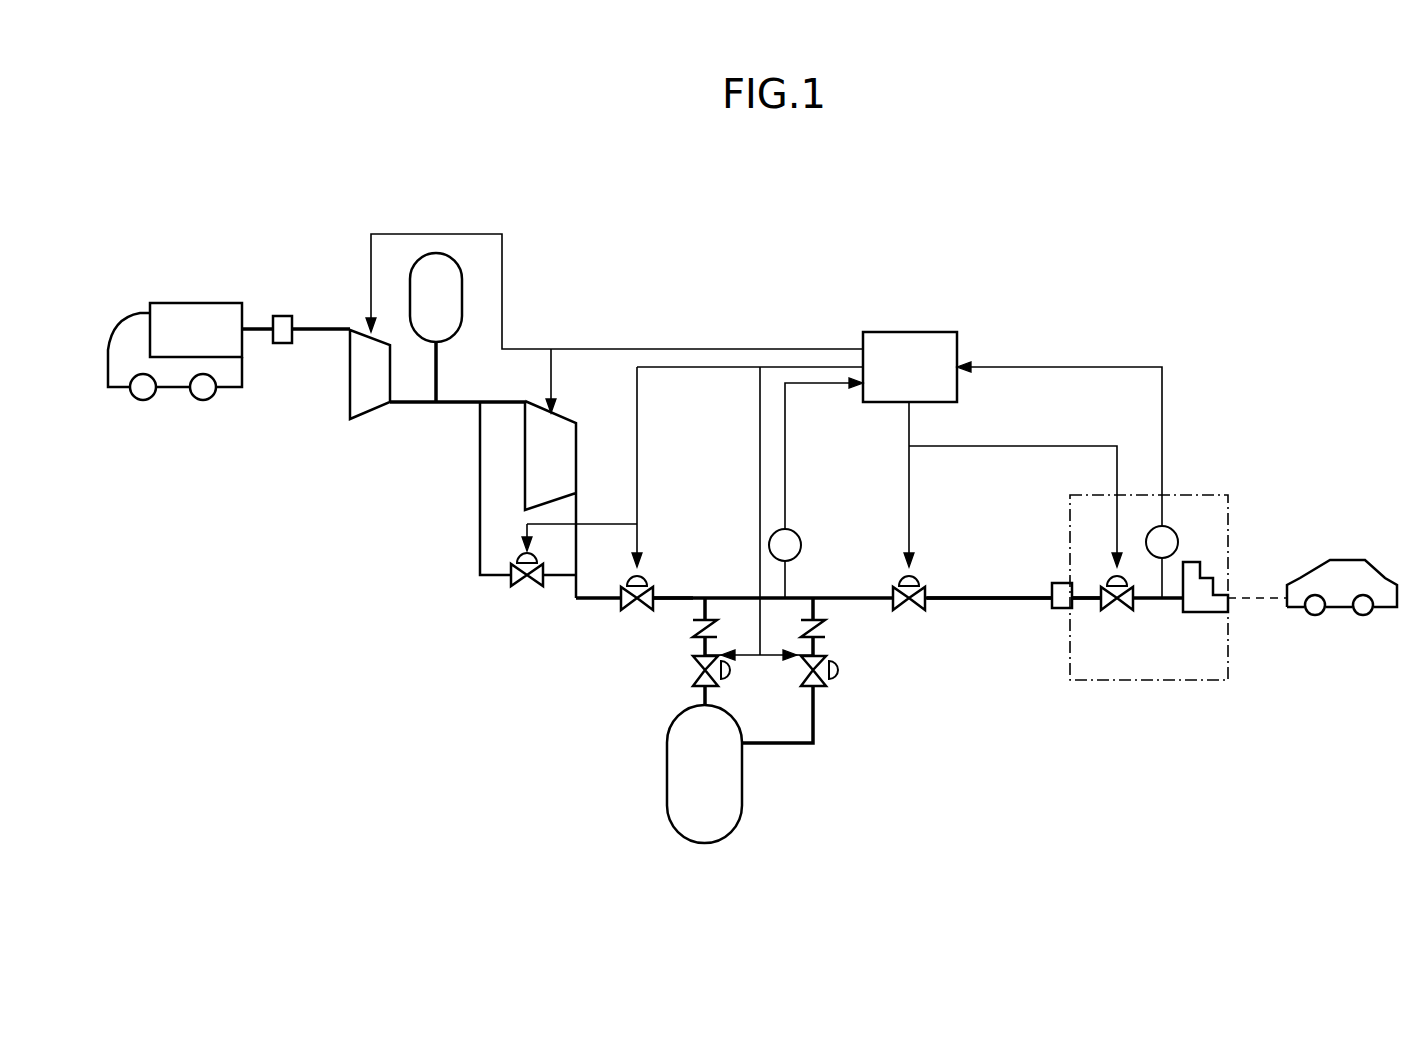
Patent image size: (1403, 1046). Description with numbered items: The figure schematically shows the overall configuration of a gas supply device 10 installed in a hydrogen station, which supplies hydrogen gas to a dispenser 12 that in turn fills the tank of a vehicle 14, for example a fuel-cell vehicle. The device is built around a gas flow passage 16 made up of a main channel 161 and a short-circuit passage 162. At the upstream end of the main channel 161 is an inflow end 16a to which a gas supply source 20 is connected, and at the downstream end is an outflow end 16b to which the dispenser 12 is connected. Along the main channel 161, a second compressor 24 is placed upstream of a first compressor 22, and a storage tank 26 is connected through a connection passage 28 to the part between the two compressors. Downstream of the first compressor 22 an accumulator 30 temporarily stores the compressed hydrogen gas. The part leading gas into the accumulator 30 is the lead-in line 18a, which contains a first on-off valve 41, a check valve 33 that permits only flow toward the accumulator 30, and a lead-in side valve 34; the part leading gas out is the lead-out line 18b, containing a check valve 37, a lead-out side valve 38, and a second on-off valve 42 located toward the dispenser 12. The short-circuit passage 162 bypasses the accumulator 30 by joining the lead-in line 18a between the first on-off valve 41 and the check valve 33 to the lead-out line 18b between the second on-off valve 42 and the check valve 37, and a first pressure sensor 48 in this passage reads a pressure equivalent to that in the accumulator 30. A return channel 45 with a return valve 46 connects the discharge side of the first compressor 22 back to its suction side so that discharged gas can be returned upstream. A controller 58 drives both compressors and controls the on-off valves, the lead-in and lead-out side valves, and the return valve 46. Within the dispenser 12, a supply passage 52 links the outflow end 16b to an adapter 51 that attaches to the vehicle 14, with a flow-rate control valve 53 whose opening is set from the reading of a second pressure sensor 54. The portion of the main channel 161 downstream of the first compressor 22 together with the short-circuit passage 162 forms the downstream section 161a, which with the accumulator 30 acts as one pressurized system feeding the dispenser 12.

The gas supply device 10 is at (714, 275).
The dispenser 12 is at (1218, 683).
The vehicle 14 is at (1342, 612).
The gas flow passage 16 is at (578, 610).
The inflow end 16a is at (283, 316).
The outflow end 16b is at (1062, 610).
The lead-in line 18a is at (695, 648).
The lead-out line 18b is at (815, 727).
The gas supply source 20 is at (198, 302).
The first compressor 22 is at (565, 412).
The second compressor 24 is at (350, 399).
The storage tank 26 is at (462, 284).
The connection passage 28 is at (436, 370).
The accumulator 30 is at (742, 790).
The check valve 33 is at (697, 630).
The lead-in side valve 34 is at (693, 672).
The check valve 37 is at (820, 637).
The lead-out side valve 38 is at (840, 672).
The first on-off valve 41 is at (641, 568).
The second on-off valve 42 is at (917, 568).
The return channel 45 is at (480, 462).
The return valve 46 is at (518, 588).
The first pressure sensor 48 is at (790, 528).
The adapter 51 is at (1205, 575).
The supply passage 52 is at (1087, 596).
The flow-rate control valve 53 is at (1127, 610).
The second pressure sensor 54 is at (1172, 528).
The controller 58 is at (957, 338).
The main channel 161 is at (690, 586).
The downstream section 161a is at (982, 596).
The short-circuit passage 162 is at (800, 596).